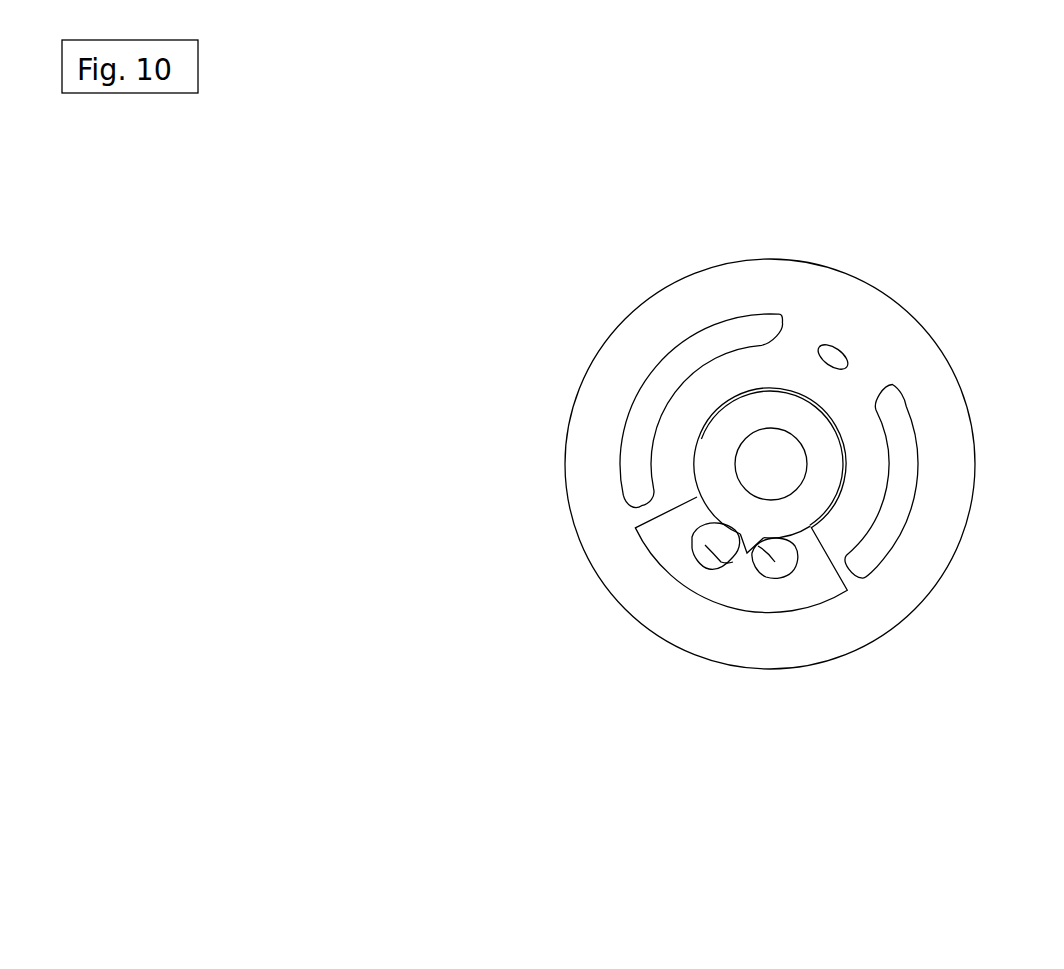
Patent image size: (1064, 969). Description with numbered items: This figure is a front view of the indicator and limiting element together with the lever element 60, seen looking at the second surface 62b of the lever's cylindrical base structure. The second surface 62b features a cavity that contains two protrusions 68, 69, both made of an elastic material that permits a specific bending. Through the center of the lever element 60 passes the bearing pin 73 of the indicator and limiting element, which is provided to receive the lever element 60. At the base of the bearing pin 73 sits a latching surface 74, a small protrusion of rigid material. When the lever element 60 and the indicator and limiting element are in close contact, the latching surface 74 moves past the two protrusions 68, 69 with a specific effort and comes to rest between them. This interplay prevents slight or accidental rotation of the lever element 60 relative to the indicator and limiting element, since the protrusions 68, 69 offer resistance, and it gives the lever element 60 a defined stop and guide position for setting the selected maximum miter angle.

The lever element 60 is at (618, 385).
The second surface 62b is at (907, 582).
The bearing pin 73 is at (823, 462).
The latching surface 74 is at (745, 553).
The protrusion 68 is at (705, 545).
The protrusion 69 is at (775, 562).